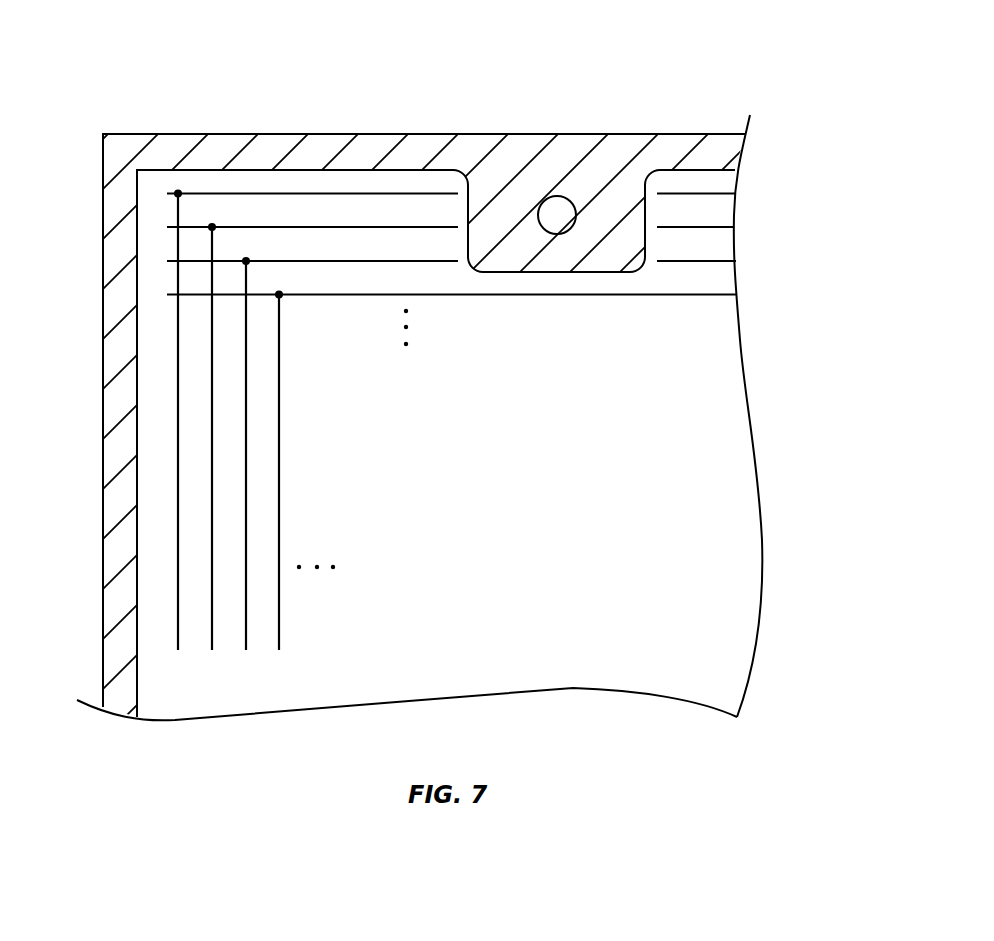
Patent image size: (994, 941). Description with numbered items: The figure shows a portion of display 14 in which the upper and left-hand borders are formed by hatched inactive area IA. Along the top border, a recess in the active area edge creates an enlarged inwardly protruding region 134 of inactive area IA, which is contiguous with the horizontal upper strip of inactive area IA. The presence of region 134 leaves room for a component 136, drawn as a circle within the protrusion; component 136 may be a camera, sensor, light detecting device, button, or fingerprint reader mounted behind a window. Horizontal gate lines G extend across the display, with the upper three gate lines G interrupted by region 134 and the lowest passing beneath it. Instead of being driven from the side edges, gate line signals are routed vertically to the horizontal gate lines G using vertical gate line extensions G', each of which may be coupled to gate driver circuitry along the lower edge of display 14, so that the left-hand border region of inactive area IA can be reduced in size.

The display 14 is at (418, 388).
The inactive area IA is at (405, 418).
The inwardly protruding region of inactive area 134 is at (628, 240).
The component 136 is at (558, 202).
The horizontal gate lines G is at (452, 257).
The vertical gate line extensions G' is at (229, 434).